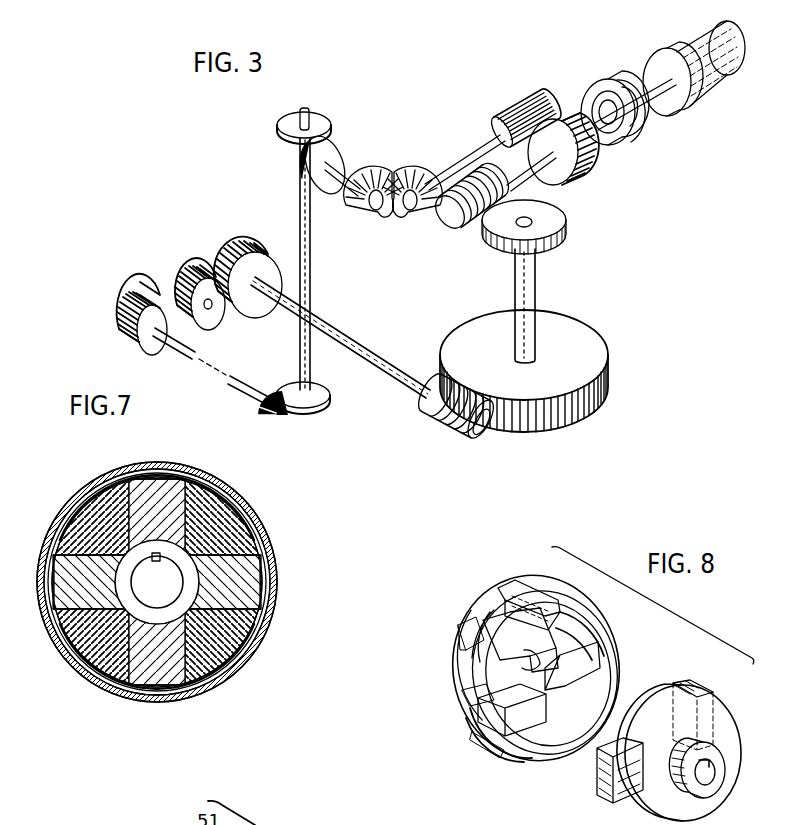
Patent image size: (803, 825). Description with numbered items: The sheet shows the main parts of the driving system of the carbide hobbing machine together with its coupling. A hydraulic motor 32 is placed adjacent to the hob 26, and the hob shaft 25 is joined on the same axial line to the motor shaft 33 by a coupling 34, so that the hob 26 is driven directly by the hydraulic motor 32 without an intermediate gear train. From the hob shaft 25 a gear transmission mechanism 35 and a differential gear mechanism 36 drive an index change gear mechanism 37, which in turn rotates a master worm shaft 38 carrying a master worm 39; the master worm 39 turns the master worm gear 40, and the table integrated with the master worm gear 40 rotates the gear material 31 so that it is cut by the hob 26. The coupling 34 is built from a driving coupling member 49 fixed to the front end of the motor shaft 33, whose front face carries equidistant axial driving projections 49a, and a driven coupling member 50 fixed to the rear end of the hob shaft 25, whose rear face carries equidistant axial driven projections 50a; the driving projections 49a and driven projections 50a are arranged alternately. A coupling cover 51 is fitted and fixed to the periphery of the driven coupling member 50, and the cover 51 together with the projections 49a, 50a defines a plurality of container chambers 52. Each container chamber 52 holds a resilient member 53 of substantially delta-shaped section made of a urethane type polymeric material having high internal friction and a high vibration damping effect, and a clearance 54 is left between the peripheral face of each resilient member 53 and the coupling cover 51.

In FIG. 3, the hob shaft 25 is at (512, 172).
In FIG. 3, the hob 26 is at (456, 233).
In FIG. 3, the gear material 31 is at (566, 238).
In FIG. 3, the hydraulic motor 32 is at (704, 93).
In FIG. 3, the motor shaft 33 is at (662, 102).
In FIG. 7, the motor shaft 33 is at (172, 580).
In FIG. 3, the coupling 34 is at (629, 134).
In FIG. 7, the coupling 34 is at (144, 462).
In FIG. 3, the gear transmission mechanism 35 is at (406, 163).
In FIG. 3, the differential gear mechanism 36 is at (309, 273).
In FIG. 3, the index change gear mechanism 37 is at (169, 281).
In FIG. 3, the master worm shaft 38 is at (356, 334).
In FIG. 3, the master worm 39 is at (444, 427).
In FIG. 3, the master worm gear 40 is at (540, 428).
In FIG. 7, the driving coupling member 49 is at (263, 566).
In FIG. 8, the driving coupling member 49 is at (722, 718).
In FIG. 7, the driving projections 49a is at (56, 568).
In FIG. 8, the driving projections 49a is at (701, 687).
In FIG. 7, the driven coupling member 50 is at (127, 697).
In FIG. 8, the driven coupling member 50 is at (500, 603).
In FIG. 7, the driven projections 50a is at (174, 466).
In FIG. 8, the driven projections 50a is at (554, 605).
In FIG. 7, the coupling cover 51 is at (108, 468).
In FIG. 8, the coupling cover 51 is at (534, 574).
In FIG. 7, the container chambers 52 is at (206, 491).
In FIG. 7, the resilient member 53 is at (82, 509).
In FIG. 8, the resilient member 53 is at (592, 632).
In FIG. 7, the clearance 54 is at (57, 634).
In FIG. 8, the clearance 54 is at (492, 742).